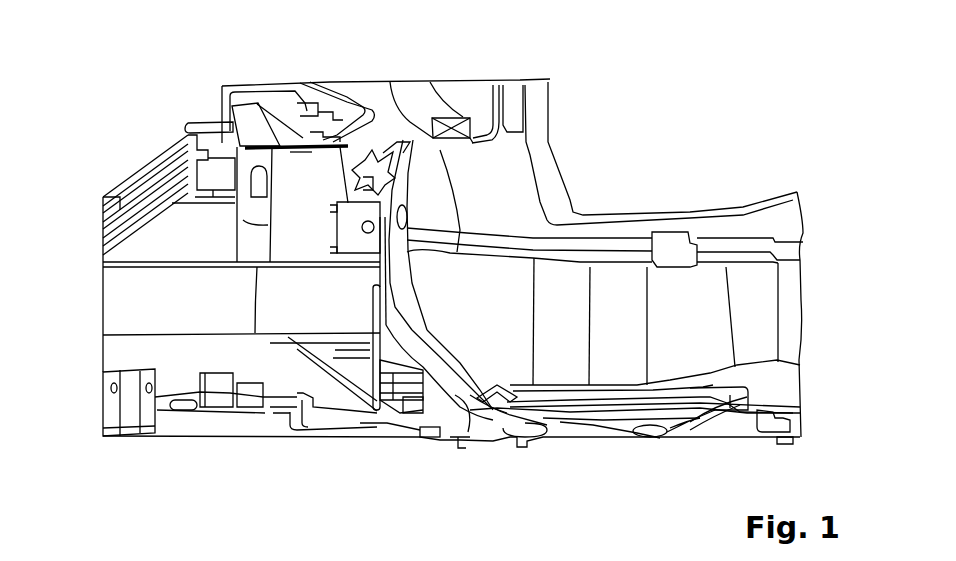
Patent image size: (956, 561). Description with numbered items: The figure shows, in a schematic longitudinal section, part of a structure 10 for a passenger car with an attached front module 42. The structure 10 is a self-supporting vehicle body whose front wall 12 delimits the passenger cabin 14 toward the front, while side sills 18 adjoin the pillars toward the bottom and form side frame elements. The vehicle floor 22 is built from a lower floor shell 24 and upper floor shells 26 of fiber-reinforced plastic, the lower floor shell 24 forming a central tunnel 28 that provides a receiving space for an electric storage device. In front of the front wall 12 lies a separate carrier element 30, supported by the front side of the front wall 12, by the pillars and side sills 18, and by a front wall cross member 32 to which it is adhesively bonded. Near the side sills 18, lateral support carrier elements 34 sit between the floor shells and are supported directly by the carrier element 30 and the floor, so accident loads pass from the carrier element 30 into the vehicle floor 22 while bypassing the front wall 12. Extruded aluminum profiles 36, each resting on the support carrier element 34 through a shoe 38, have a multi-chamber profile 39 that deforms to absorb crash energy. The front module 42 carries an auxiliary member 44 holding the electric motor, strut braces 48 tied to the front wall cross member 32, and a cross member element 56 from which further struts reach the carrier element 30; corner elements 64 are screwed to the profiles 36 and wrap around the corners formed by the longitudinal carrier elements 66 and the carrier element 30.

The structure 10 is at (532, 450).
The front wall 12 is at (415, 172).
The passenger cabin 14 is at (740, 133).
The side sills 18 is at (463, 445).
The vehicle floor 22 is at (815, 437).
The lower floor shell 24 is at (573, 433).
The upper floor shells 26 is at (603, 402).
The central tunnel 28 is at (623, 288).
The carrier element 30 is at (405, 190).
The front wall cross member 32 is at (420, 92).
The support carrier elements 34 is at (413, 347).
The extruded aluminum profiles 36 is at (415, 412).
The shoe 38 is at (443, 393).
The multi-chamber profile 39 is at (381, 416).
The front module 42 is at (115, 447).
The auxiliary member 44 is at (185, 435).
The strut braces 48 is at (358, 111).
The cross member element 56 is at (252, 120).
The corner elements 64 is at (330, 341).
The longitudinal carrier elements 66 is at (187, 240).